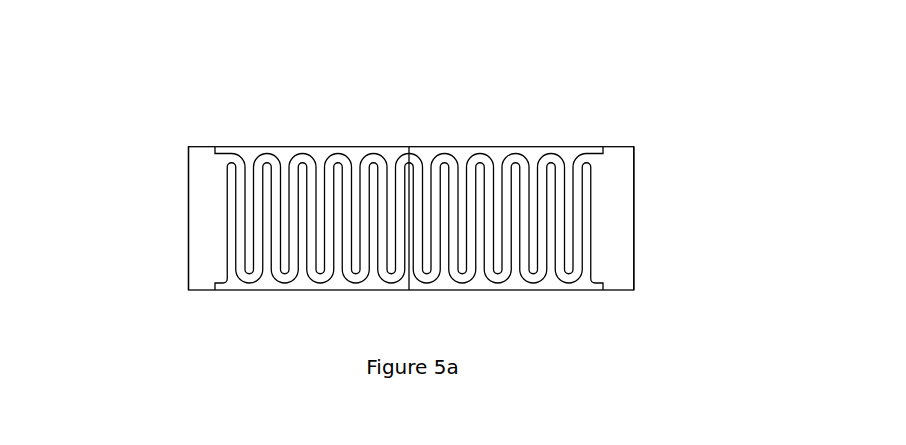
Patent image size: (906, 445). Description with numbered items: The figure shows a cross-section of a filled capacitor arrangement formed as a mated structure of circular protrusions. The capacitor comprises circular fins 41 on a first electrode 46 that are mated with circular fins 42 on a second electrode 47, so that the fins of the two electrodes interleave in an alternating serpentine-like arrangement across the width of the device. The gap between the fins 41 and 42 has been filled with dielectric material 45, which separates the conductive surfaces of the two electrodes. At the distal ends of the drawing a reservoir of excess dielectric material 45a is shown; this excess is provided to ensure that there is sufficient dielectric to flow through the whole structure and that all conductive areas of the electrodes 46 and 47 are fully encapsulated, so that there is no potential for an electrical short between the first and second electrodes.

The circular fins 41 is at (572, 168).
The circular fins 42 is at (552, 235).
The dielectric material 45 is at (273, 170).
The reservoir of excess dielectric material 45a is at (203, 203).
The first electrode 46 is at (463, 147).
The second electrode 47 is at (297, 285).